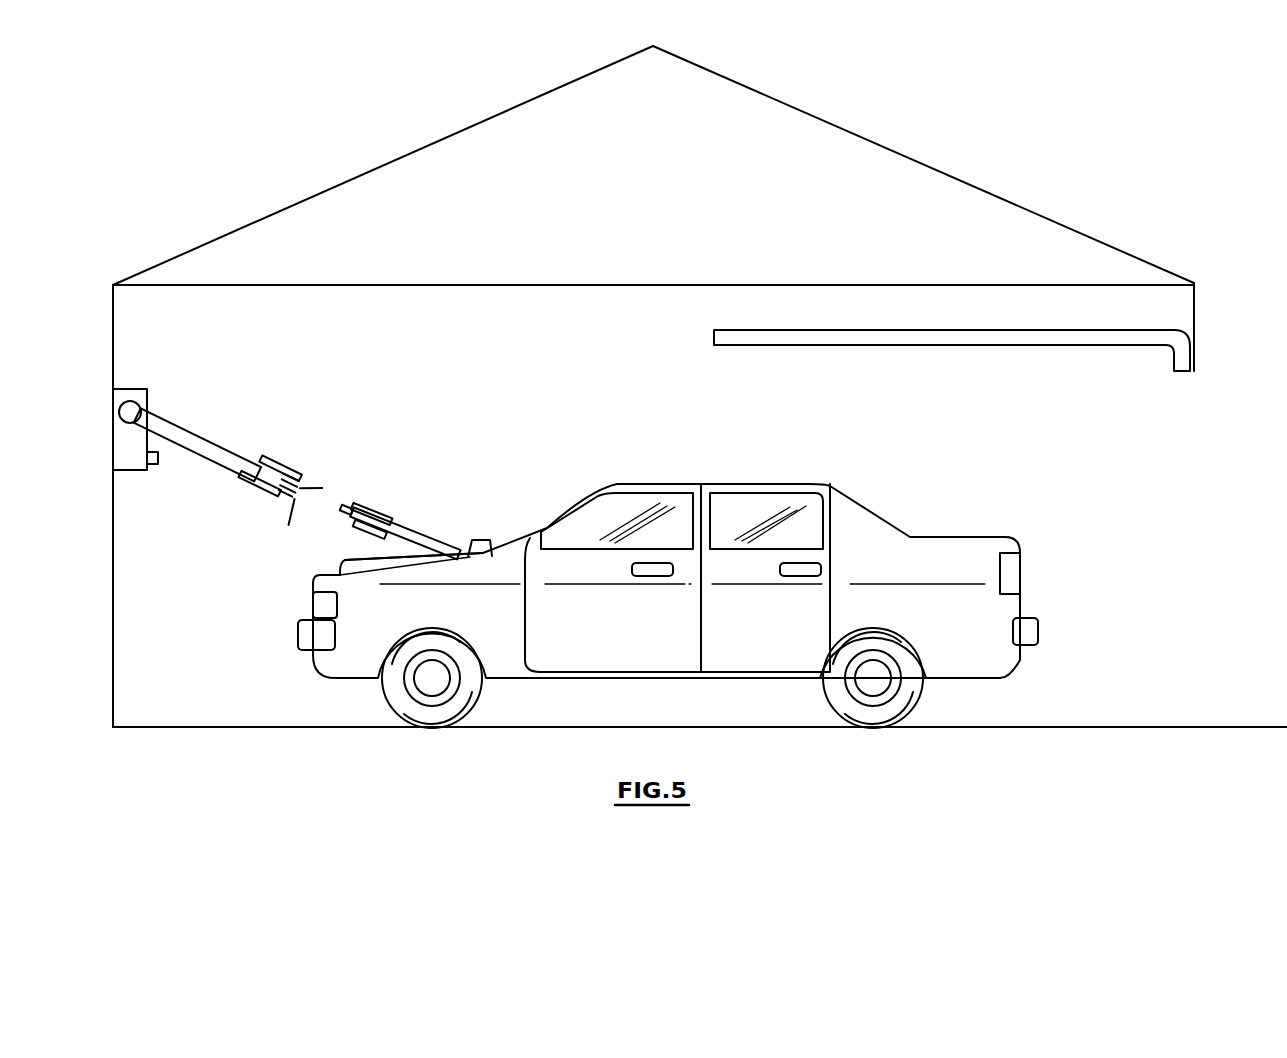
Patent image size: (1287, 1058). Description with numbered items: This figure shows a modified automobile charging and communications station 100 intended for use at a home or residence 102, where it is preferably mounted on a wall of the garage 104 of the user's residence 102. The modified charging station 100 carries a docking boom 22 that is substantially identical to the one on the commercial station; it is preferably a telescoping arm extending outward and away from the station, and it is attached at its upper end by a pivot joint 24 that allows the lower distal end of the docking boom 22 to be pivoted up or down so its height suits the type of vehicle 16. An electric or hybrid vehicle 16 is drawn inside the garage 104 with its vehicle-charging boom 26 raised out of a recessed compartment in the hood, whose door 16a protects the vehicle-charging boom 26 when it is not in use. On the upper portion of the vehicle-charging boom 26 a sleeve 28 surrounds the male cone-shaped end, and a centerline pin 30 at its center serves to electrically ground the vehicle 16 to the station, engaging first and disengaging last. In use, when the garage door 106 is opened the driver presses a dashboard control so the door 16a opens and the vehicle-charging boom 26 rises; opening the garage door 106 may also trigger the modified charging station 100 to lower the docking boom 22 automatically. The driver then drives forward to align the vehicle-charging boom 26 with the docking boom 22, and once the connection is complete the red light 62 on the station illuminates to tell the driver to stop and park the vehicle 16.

The modified automobile charging and communications station 100 is at (50, 520).
The residence 102 is at (953, 176).
The garage 104 is at (1197, 318).
The garage door 106 is at (917, 346).
The vehicle 16 is at (733, 484).
The door 16a is at (478, 540).
The docking boom 22 is at (218, 443).
The pivot joint 24 is at (132, 405).
The vehicle-charging boom 26 is at (412, 530).
The sleeve 28 is at (385, 511).
The centerline pin 30 is at (347, 510).
The red light 62 is at (159, 458).